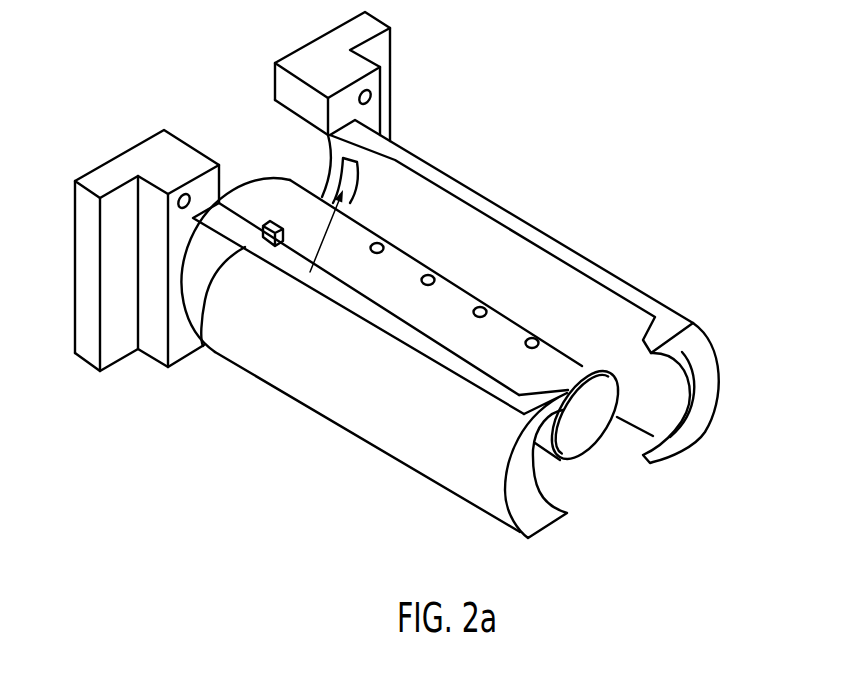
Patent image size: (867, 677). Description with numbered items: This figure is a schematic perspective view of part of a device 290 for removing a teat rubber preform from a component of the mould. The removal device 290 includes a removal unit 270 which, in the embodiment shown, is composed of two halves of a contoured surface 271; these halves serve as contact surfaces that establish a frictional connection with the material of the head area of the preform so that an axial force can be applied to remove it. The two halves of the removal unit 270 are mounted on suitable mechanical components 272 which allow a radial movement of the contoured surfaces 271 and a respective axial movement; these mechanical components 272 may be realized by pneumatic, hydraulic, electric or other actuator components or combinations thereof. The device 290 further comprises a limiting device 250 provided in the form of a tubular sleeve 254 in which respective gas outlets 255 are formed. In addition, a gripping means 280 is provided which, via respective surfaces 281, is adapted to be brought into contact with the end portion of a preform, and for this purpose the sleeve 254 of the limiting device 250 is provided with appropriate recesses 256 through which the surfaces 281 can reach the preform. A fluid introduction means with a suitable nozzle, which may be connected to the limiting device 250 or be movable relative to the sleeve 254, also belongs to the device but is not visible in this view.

The limiting device 250 is at (497, 363).
The tubular sleeve 254 is at (390, 292).
The gas outlets 255 is at (478, 314).
The recesses 256 is at (204, 345).
The removal unit 270 is at (623, 288).
The contoured surface 271 is at (677, 415).
The mechanical components 272 is at (377, 100).
The gripping means 280 is at (316, 271).
The surfaces 281 is at (357, 173).
The device for removing a preform 290 is at (578, 146).